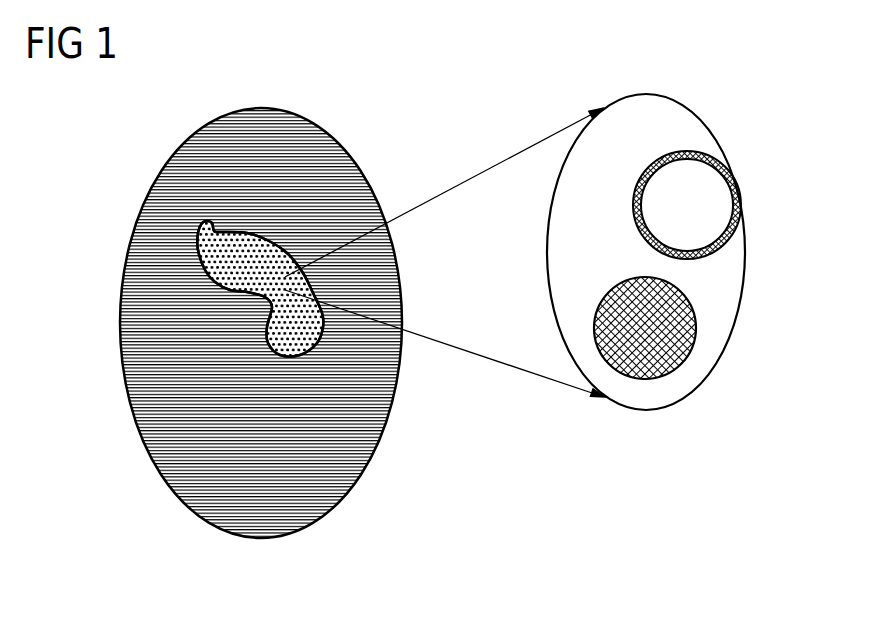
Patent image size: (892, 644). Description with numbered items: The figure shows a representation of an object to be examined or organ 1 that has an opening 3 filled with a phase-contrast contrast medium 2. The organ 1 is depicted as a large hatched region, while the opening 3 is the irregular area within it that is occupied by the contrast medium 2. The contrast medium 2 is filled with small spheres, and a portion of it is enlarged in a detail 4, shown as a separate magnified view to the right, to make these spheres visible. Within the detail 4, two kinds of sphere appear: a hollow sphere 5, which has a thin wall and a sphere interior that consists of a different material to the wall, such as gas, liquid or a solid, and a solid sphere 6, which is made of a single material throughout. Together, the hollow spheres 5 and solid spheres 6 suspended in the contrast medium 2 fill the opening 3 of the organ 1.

The object to be examined or organ 1 is at (153, 205).
The contrast medium 2 is at (213, 243).
The opening 3 is at (222, 284).
The detail 4 is at (708, 124).
The hollow sphere 5 is at (726, 243).
The solid sphere 6 is at (695, 330).